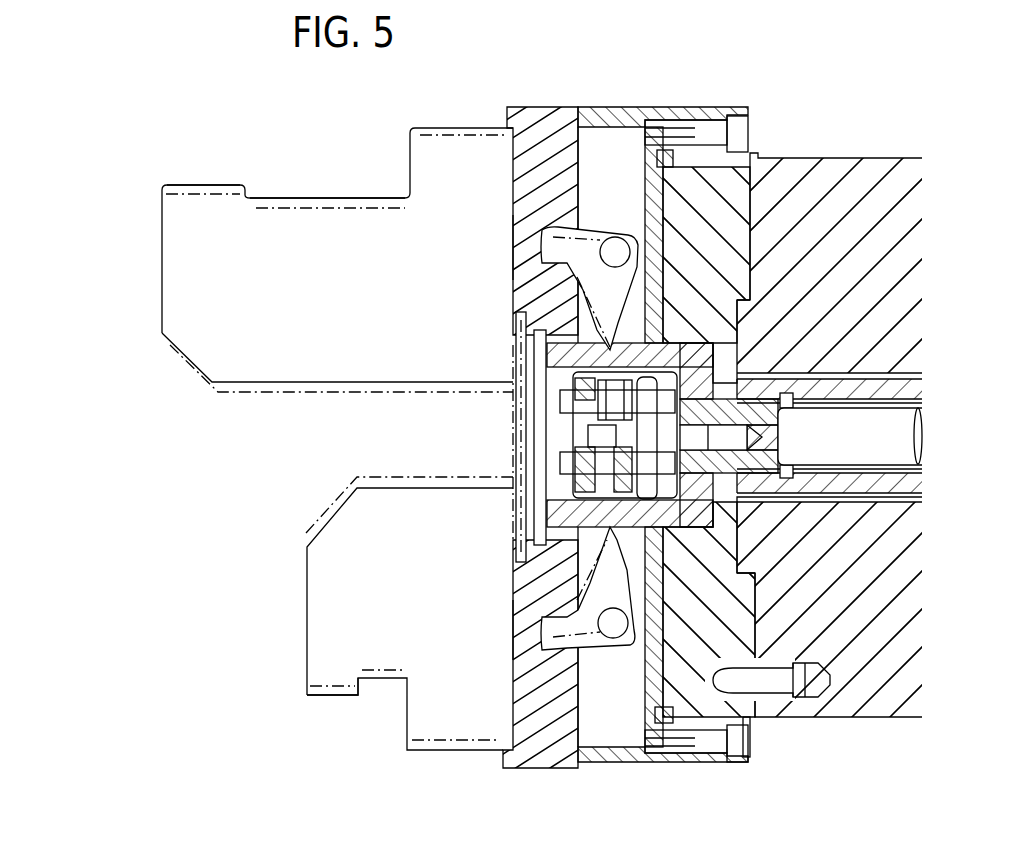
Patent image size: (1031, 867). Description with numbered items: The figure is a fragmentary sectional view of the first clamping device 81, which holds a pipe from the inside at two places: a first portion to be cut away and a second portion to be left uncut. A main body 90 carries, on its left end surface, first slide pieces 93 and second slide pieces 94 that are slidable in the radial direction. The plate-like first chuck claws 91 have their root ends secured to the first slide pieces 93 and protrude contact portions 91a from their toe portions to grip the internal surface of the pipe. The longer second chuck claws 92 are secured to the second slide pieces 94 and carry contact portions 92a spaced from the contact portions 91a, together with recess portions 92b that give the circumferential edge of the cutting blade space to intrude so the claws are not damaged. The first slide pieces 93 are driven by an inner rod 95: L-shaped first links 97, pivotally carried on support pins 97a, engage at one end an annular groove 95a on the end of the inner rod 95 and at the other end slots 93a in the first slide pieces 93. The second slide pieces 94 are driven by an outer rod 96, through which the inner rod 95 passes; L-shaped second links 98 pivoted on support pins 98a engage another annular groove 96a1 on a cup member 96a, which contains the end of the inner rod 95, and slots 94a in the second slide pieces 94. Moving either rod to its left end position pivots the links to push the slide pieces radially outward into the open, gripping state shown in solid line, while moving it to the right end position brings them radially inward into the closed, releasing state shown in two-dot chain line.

The first clamping device 81 is at (754, 70).
The main body 90 is at (835, 158).
The first chuck claws 91 is at (307, 588).
The contact portions 91a is at (332, 700).
The second chuck claws 92 is at (162, 270).
The contact portions 92a is at (198, 183).
The recess portions 92b is at (303, 198).
The first slide pieces 93 is at (542, 772).
The slots 93a is at (528, 667).
The second slide pieces 94 is at (550, 107).
The slots 94a is at (513, 228).
The inner rod 95 is at (912, 435).
The annular groove 95a is at (577, 465).
The outer rod 96 is at (915, 392).
The cup member 96a is at (555, 428).
The annular groove 96a1 is at (513, 365).
The first links 97 is at (627, 648).
The support pins 97a is at (612, 632).
The second links 98 is at (603, 227).
The support pins 98a is at (619, 250).